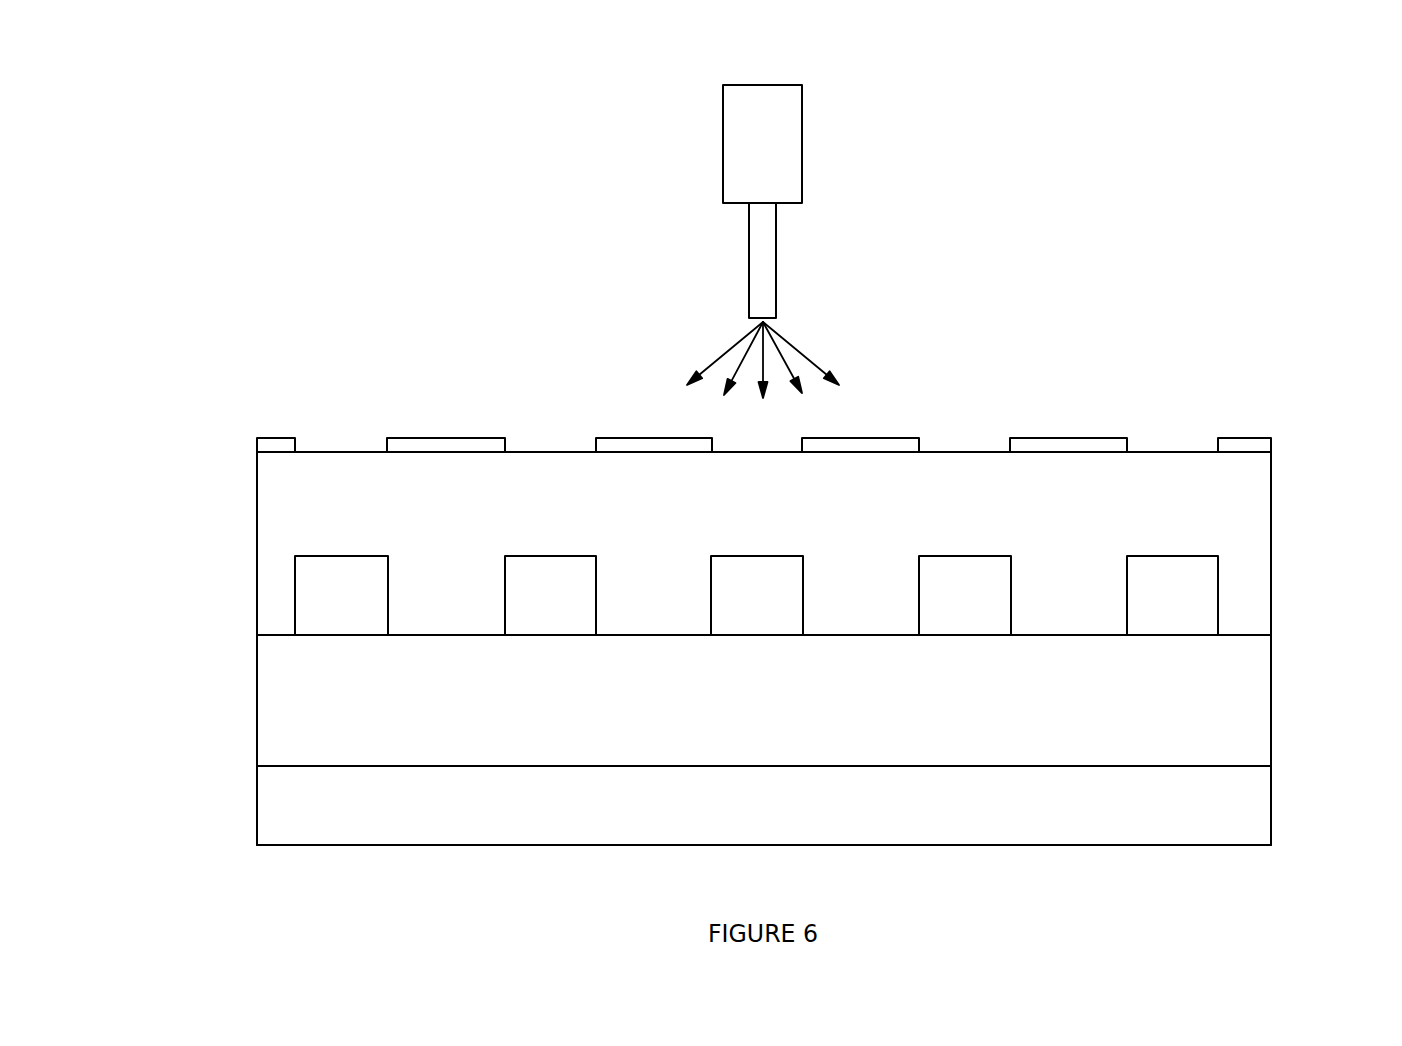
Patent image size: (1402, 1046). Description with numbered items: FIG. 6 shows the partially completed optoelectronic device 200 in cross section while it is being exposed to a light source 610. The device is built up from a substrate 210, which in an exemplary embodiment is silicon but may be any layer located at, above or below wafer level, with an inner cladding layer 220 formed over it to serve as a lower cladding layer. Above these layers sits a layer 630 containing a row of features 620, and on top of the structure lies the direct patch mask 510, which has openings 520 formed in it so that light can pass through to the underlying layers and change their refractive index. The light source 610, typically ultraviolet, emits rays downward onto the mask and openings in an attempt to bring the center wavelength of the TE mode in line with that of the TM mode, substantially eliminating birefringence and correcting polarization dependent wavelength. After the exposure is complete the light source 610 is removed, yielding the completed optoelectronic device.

The partially completed optoelectronic device 200 is at (161, 100).
The substrate 210 is at (257, 820).
The inner cladding layer 220 is at (257, 712).
The direct patch mask 510 is at (1271, 452).
The openings 520 is at (325, 440).
The light source 610 is at (723, 347).
The embedded blocks 620 is at (1219, 577).
The dielectric layer 630 is at (1271, 500).